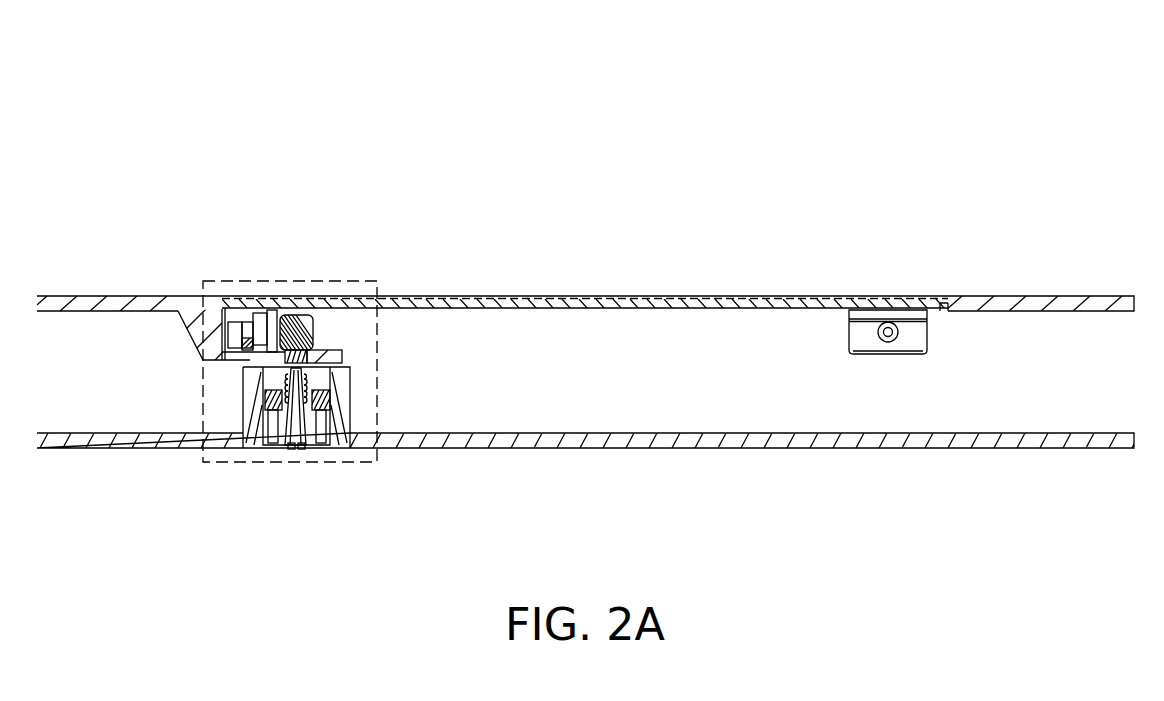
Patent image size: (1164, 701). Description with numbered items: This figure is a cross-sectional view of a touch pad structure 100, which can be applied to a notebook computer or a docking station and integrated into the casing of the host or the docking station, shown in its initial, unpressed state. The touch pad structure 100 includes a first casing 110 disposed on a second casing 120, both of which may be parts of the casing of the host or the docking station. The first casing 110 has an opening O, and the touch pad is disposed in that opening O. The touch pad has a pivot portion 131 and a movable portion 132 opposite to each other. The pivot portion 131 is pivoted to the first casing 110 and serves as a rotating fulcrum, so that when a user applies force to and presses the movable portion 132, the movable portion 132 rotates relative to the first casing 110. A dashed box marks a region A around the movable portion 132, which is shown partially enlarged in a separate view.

The touch pad structure 100 is at (1056, 131).
The first casing 110 is at (1042, 302).
The second casing 120 is at (885, 448).
The pivot portion 131 is at (883, 298).
The movable portion 132 is at (327, 296).
The opening O is at (944, 309).
The region A is at (375, 281).